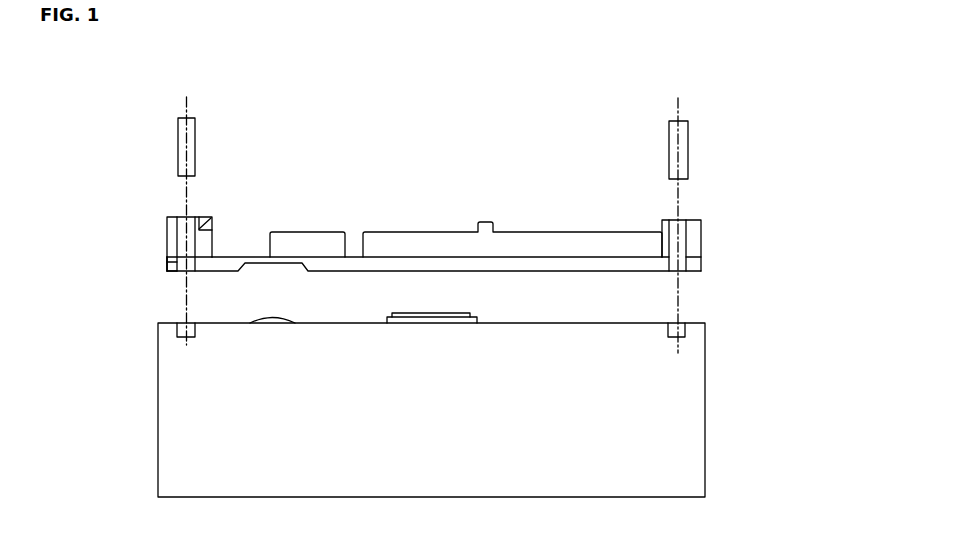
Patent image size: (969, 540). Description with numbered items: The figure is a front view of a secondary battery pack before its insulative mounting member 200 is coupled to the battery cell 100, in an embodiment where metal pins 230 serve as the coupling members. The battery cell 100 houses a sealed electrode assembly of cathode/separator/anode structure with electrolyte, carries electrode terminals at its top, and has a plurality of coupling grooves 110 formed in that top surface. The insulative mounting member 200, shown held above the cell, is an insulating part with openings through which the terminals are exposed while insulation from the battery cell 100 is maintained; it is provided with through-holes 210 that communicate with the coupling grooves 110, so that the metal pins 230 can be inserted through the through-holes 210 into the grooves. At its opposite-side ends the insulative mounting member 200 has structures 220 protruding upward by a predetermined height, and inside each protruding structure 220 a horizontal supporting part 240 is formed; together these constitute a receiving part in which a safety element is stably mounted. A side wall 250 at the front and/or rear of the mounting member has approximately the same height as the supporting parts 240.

The battery cell 100 is at (705, 405).
The coupling grooves 110 is at (177, 328).
The insulative mounting member 200 is at (701, 247).
The through-holes 210 is at (172, 262).
The protruding structures 220 is at (701, 220).
The metal pins 230 is at (178, 143).
The supporting part 240 is at (212, 218).
The side wall 250 is at (400, 232).